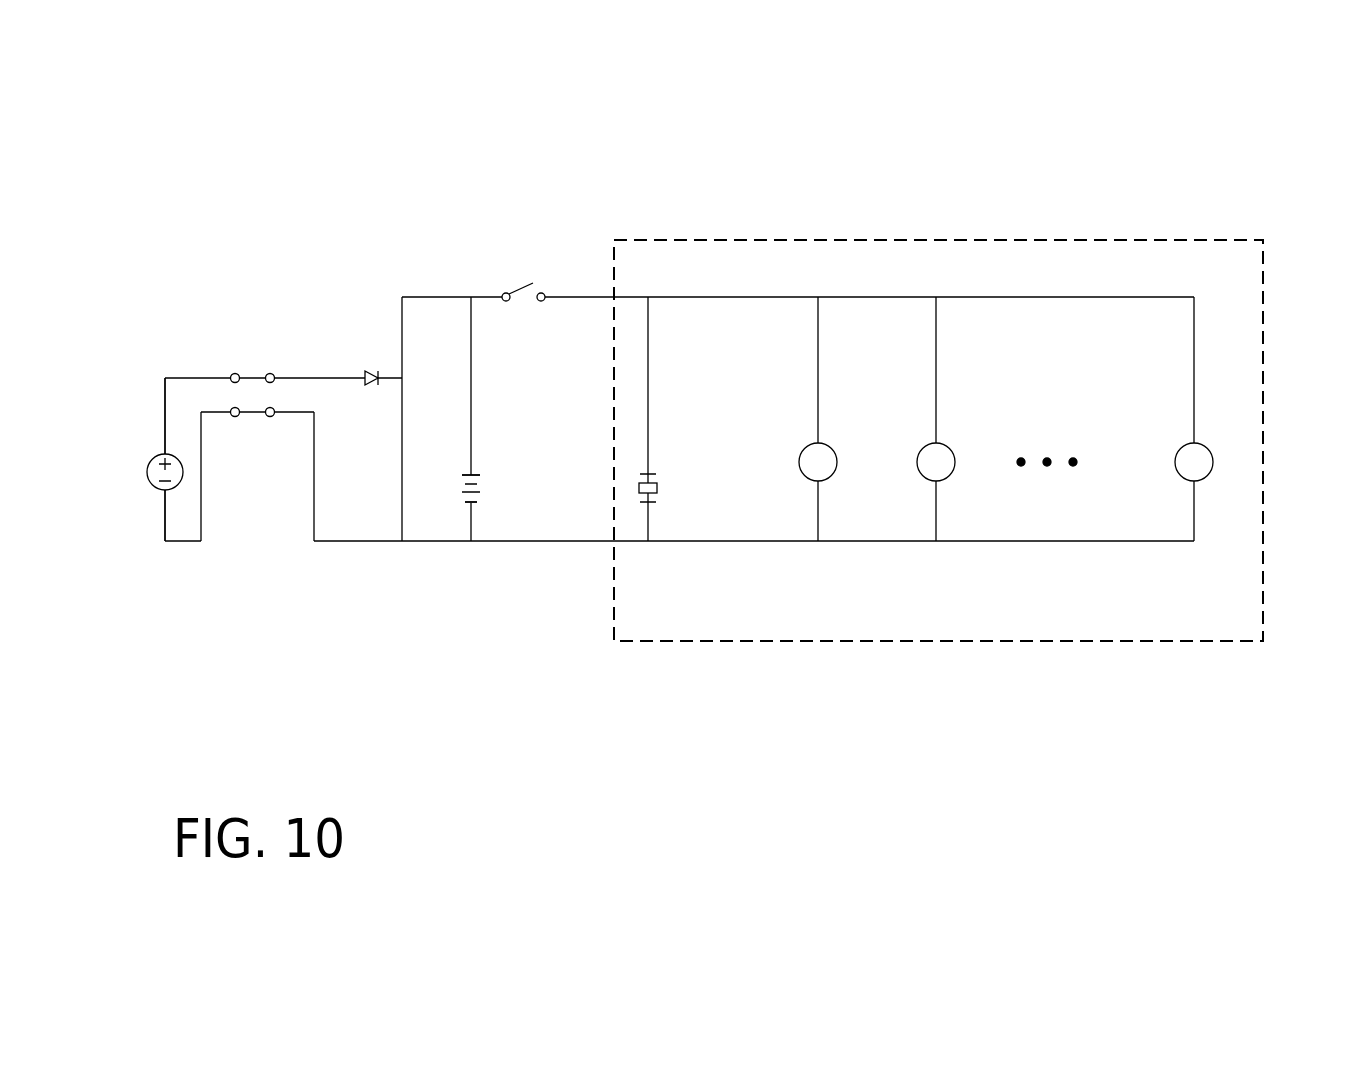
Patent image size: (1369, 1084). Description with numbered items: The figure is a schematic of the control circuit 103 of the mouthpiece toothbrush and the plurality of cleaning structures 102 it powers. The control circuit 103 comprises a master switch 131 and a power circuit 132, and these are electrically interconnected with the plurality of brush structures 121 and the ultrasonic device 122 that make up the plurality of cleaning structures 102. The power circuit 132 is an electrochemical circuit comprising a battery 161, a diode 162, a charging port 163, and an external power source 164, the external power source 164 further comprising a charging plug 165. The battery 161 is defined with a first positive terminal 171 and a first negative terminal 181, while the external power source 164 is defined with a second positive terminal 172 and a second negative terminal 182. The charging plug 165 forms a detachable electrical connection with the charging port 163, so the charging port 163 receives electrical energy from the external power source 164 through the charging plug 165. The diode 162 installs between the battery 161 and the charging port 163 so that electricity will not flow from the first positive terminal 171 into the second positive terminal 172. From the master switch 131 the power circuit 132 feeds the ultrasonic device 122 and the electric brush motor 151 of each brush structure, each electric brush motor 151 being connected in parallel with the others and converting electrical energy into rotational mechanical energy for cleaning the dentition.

The plurality of cleaning structures 102 is at (1268, 326).
The control circuit 103 is at (170, 238).
The plurality of brush structures 121 is at (1215, 445).
The ultrasonic device 122 is at (667, 486).
The master switch 131 is at (519, 276).
The power circuit 132 is at (261, 532).
The electric brush motor 151 is at (828, 445).
The battery 161 is at (491, 487).
The diode 162 is at (372, 364).
The charging port 163 is at (268, 367).
The external power source 164 is at (146, 468).
The charging plug 165 is at (234, 366).
The first positive terminal 171 is at (471, 452).
The second positive terminal 172 is at (164, 438).
The first negative terminal 181 is at (471, 514).
The second negative terminal 182 is at (163, 513).